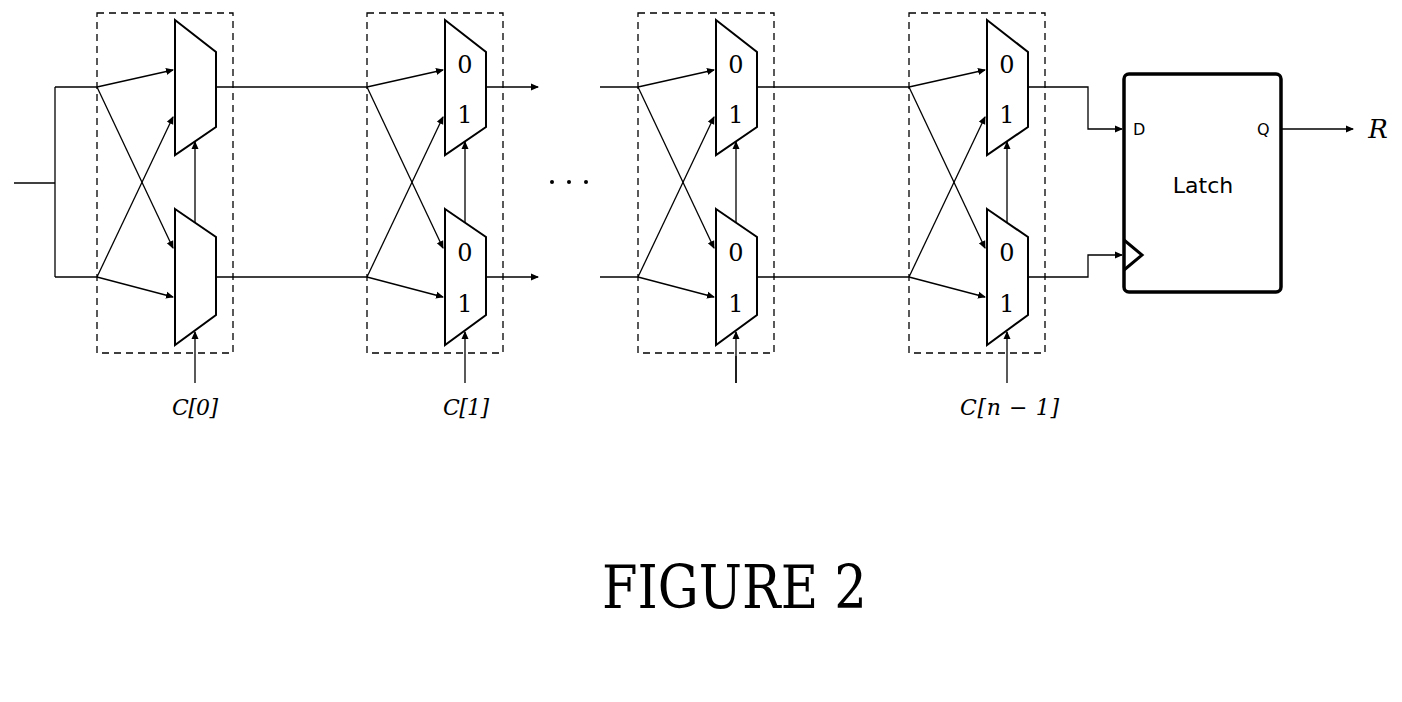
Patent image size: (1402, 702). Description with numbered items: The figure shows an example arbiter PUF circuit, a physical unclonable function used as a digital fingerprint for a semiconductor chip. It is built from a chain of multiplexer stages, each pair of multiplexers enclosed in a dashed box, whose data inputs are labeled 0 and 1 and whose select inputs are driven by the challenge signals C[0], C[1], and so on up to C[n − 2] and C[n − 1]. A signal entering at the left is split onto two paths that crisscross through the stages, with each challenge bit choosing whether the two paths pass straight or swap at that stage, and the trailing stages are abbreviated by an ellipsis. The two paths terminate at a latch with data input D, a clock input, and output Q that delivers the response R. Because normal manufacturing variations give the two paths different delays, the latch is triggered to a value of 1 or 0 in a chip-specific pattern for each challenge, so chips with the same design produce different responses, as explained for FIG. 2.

The multiplexer 0 input path 0 is at (156, 143).
The multiplexer 1 input path 1 is at (156, 223).
The control input C[n-2] 2 is at (737, 388).